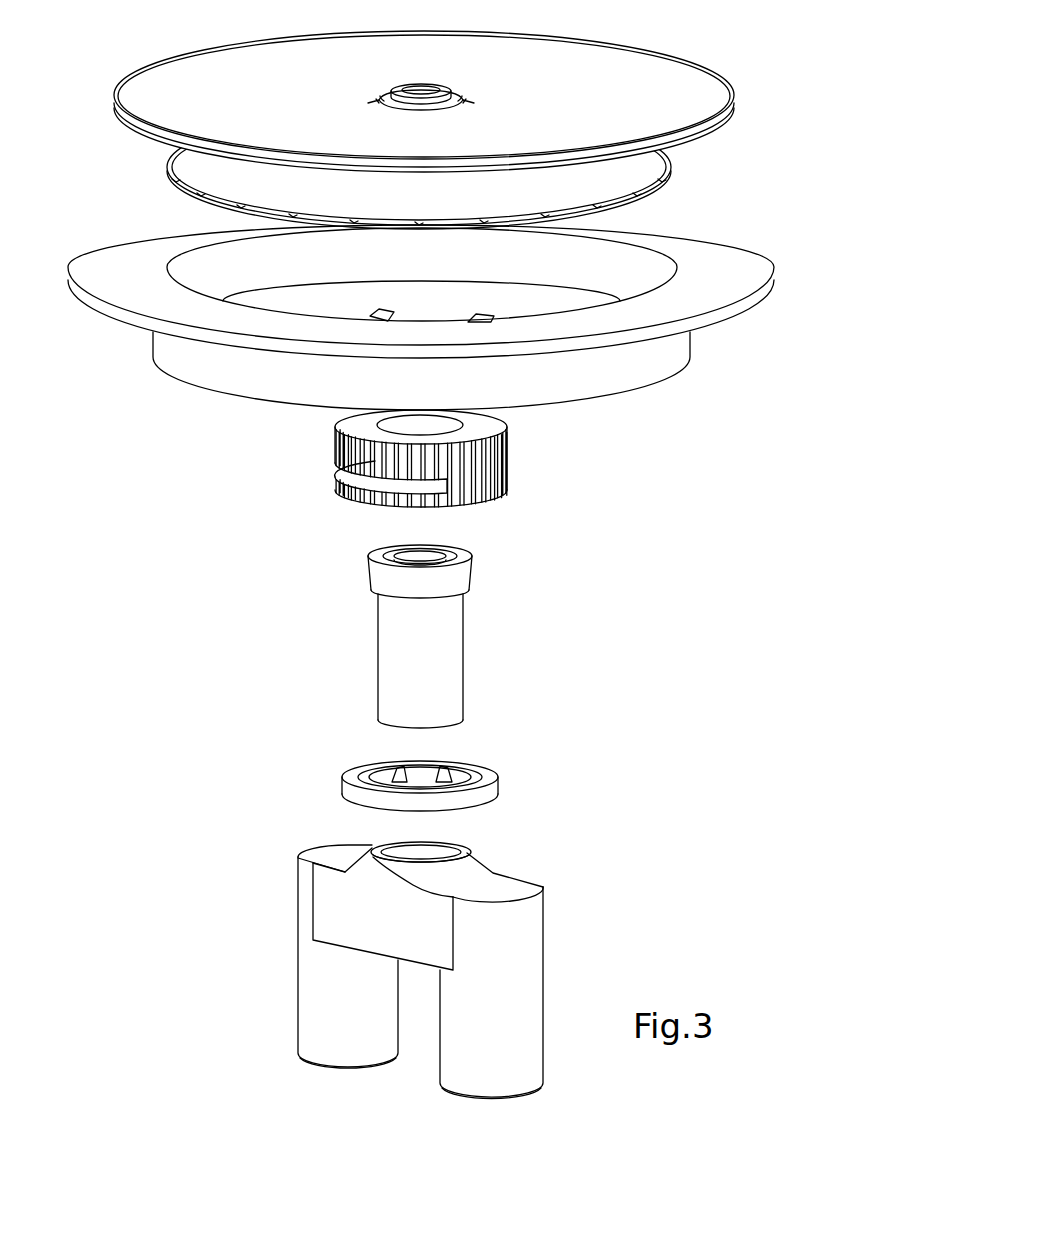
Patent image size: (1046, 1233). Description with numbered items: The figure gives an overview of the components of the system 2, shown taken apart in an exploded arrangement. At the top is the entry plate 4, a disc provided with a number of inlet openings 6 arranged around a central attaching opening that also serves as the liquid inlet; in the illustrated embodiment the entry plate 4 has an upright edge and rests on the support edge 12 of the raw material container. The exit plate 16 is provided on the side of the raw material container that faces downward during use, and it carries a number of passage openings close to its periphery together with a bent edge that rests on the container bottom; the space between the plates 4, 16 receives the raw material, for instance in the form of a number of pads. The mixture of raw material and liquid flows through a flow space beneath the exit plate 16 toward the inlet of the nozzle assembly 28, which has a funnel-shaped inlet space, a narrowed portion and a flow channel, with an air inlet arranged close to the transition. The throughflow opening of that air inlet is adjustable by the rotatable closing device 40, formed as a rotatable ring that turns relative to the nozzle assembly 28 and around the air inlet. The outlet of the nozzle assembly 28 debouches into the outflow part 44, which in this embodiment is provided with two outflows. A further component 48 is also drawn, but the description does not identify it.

The system 2 is at (130, 623).
The entry plate 4 is at (577, 113).
The inlet openings 6 is at (172, 165).
The exit plate 16 is at (607, 165).
The support edge 12 is at (705, 285).
The rotatable closing device 40 is at (490, 470).
The nozzle assembly 28 is at (418, 635).
The retaining clip 48 is at (633, 786).
The outflow part 44 is at (487, 990).